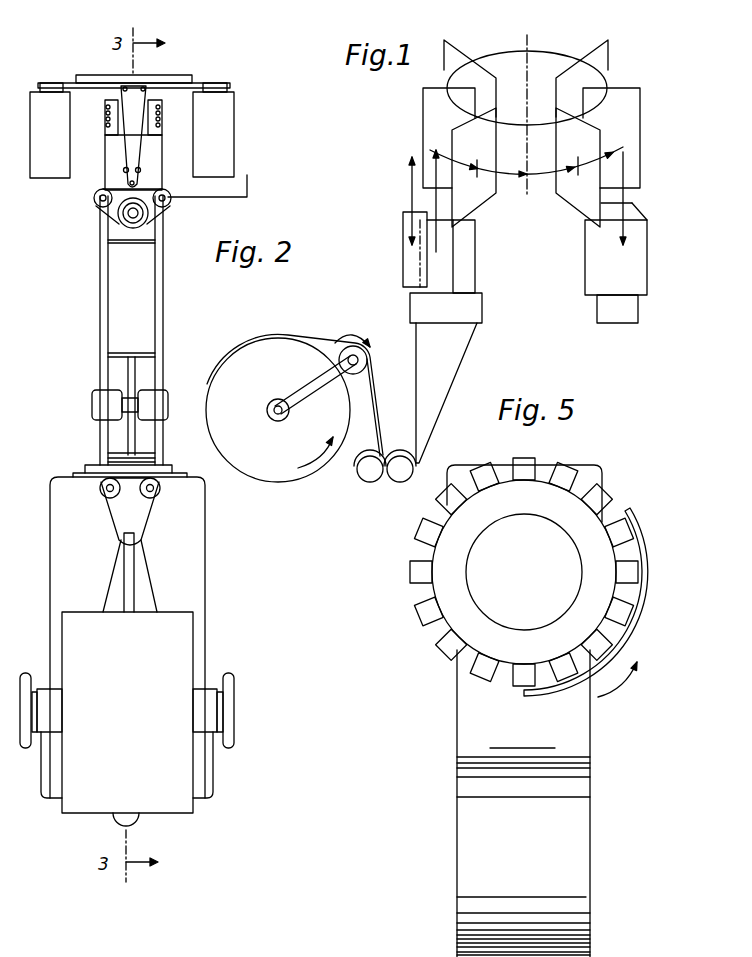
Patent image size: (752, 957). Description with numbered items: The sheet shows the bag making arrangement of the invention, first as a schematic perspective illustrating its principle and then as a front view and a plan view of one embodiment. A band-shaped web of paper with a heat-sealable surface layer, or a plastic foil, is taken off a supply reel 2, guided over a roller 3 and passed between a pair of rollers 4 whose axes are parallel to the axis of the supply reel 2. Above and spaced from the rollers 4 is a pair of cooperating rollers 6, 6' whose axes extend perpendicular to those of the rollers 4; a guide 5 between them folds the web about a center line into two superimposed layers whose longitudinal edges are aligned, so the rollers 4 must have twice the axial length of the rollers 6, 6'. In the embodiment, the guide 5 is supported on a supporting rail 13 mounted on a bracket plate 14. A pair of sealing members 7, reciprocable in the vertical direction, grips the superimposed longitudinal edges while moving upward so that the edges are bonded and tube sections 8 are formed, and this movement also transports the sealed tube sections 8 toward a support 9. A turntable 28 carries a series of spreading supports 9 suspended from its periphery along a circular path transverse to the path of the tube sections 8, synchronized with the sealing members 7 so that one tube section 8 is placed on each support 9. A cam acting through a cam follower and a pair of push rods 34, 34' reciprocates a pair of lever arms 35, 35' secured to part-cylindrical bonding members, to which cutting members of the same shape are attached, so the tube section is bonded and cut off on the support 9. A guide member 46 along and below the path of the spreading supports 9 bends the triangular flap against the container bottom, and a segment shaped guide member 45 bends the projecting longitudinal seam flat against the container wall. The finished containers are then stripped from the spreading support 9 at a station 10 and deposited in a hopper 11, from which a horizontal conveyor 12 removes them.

In FIG. 2, the supply reel 2 is at (182, 638).
In FIG. 5, the supply reel 2 is at (589, 885).
In FIG. 2, the roller 3 is at (353, 345).
In FIG. 2, the pair of rollers 4 is at (365, 482).
In FIG. 1, the guide 5 is at (446, 398).
In FIG. 2, the guide roller 6 is at (72, 499).
In FIG. 1, the guide roller 6 is at (467, 309).
In FIG. 2, the guide roller 6' is at (184, 496).
In FIG. 2, the sealing members 7 is at (157, 398).
In FIG. 1, the sealing members 7 is at (404, 268).
In FIG. 1, the tube sections 8 is at (472, 266).
In FIG. 2, the support 9 is at (128, 152).
In FIG. 1, the support 9 is at (423, 126).
In FIG. 5, the support 9 is at (445, 503).
In FIG. 1, the station 10 is at (623, 144).
In FIG. 1, the hopper 11 is at (593, 261).
In FIG. 1, the horizontal conveyor 12 is at (615, 324).
In FIG. 2, the supporting rail 13 is at (127, 575).
In FIG. 2, the bracket plate 14 is at (122, 514).
In FIG. 2, the turntable 28 is at (172, 78).
In FIG. 5, the turntable 28 is at (537, 583).
In FIG. 2, the push rod 34 is at (80, 330).
In FIG. 2, the push rod 34' is at (178, 330).
In FIG. 2, the lever arm 35 is at (110, 213).
In FIG. 2, the lever arm 35' is at (177, 213).
In FIG. 5, the segment shaped guide member 45 is at (600, 665).
In FIG. 5, the guide member 46 is at (583, 478).